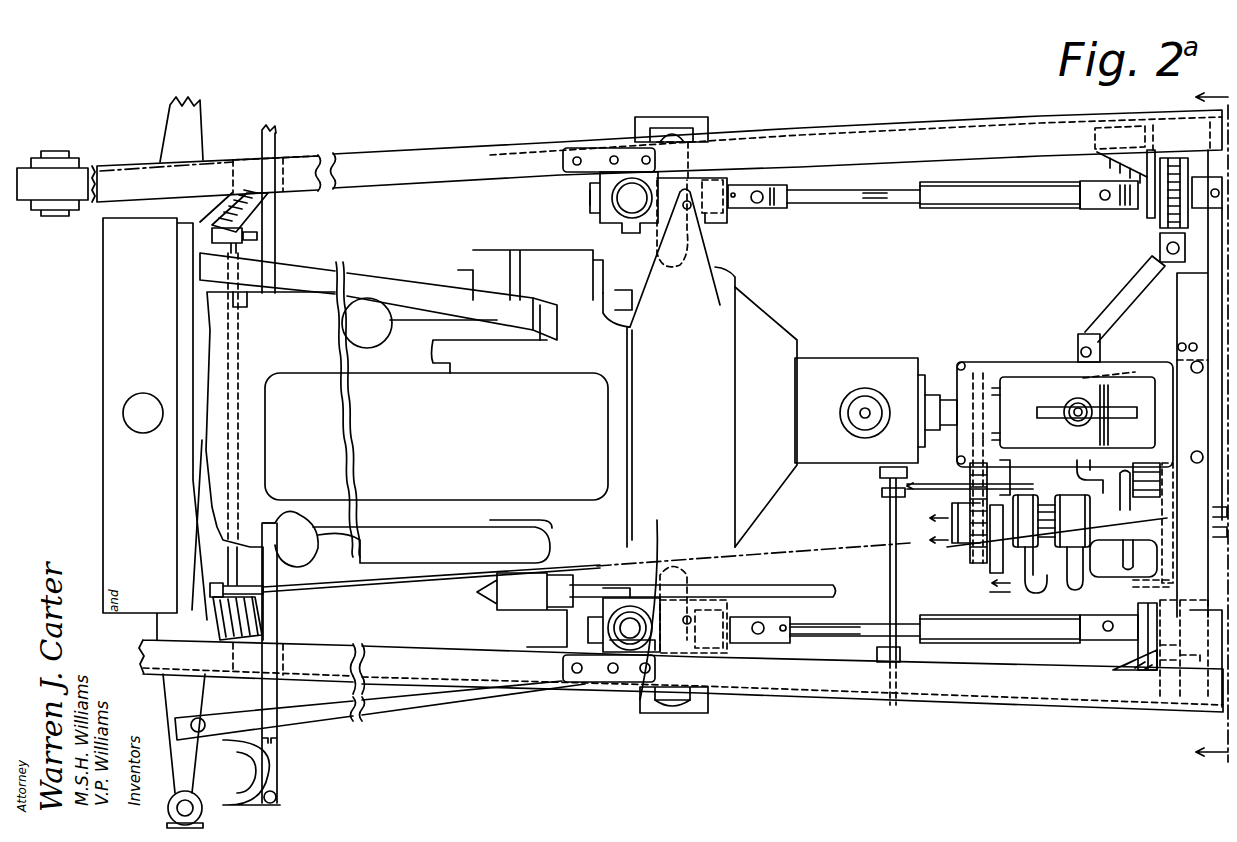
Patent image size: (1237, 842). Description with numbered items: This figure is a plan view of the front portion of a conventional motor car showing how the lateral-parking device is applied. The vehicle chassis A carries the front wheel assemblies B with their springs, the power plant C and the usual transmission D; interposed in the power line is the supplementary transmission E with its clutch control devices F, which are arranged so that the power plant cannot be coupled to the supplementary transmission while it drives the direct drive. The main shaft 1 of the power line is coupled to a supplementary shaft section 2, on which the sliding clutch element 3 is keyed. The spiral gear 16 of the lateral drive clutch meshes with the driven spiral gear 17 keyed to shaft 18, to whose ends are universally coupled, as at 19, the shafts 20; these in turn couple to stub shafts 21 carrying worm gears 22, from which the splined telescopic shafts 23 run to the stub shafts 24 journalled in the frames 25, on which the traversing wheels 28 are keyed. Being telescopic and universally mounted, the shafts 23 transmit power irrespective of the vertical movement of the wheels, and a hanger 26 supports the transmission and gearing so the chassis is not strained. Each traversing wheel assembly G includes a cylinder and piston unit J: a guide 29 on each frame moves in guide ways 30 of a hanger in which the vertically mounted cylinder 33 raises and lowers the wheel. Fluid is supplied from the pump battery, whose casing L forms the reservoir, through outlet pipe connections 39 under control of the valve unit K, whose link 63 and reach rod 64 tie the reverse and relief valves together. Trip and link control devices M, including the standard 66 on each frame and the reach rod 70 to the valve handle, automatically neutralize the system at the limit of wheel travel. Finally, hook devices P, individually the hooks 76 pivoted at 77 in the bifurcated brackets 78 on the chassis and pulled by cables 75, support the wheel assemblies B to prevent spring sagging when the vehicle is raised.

The chassis A is at (438, 156).
The wheel assemblies B is at (296, 754).
The power plant C is at (403, 384).
The transmission D is at (832, 366).
The supplementary transmission E is at (997, 360).
The clutch control devices F is at (1063, 365).
The traversing wheel assemblies G is at (562, 205).
The cylinder and piston unit J is at (622, 176).
The valve unit K is at (1123, 520).
The pump battery casing L is at (1187, 613).
The trip and link control devices M is at (825, 614).
The hook devices P is at (255, 249).
The main shaft 1 is at (920, 385).
The supplementary shaft section 2 is at (950, 392).
The clutch element 3 is at (1210, 428).
The spiral gear 16 is at (1068, 368).
The driven spiral gear 17 is at (1093, 400).
The shaft 18 is at (1119, 371).
The universal coupling 19 is at (1105, 337).
The shafts 20 is at (1130, 300).
The stub shafts 21 is at (1158, 245).
The worm gears 22 is at (1145, 220).
The splined telescopic shafts 23 is at (920, 211).
The stub shafts 24 is at (757, 192).
The frames 25 is at (657, 120).
The hanger 26 is at (1190, 290).
The traversing wheels 28 is at (680, 125).
The guide 29 is at (590, 200).
The guide ways 30 is at (592, 212).
The cylinders 33 is at (632, 612).
The outlet pipe connection 39 is at (1160, 540).
The link 63 is at (960, 483).
The reach rod 64 is at (1043, 460).
The standard 66 is at (640, 700).
The reach rod 70 is at (920, 497).
The cables 75 is at (368, 578).
The hook devices 76 is at (258, 237).
The pivot 77 is at (222, 223).
The brackets 78 is at (242, 200).